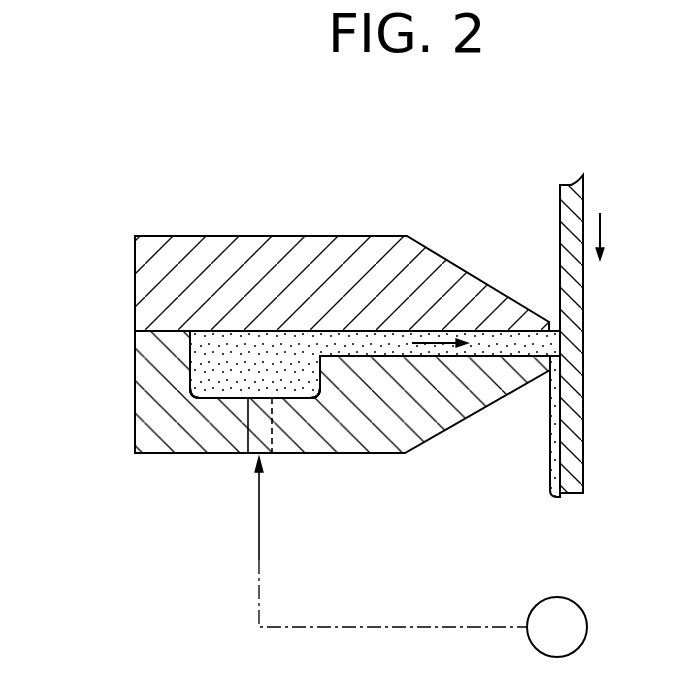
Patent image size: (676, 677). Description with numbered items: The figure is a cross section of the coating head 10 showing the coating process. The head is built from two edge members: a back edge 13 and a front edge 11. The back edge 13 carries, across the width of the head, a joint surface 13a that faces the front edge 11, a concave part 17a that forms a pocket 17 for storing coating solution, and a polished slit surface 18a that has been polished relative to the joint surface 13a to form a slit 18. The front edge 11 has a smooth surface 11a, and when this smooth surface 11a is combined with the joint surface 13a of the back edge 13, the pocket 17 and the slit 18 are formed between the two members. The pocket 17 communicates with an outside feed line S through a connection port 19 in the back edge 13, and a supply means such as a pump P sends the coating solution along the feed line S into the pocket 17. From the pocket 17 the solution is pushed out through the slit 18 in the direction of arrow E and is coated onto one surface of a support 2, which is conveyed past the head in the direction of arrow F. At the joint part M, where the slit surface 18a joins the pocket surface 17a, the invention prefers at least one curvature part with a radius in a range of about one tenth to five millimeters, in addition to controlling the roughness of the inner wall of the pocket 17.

The recording head assembly 10 is at (522, 132).
The front edge 11 is at (349, 245).
The smooth surface 11a is at (150, 333).
The back edge 13 is at (158, 430).
The joint surface 13a is at (137, 330).
The pocket 17 is at (202, 378).
The concave part 17a is at (310, 397).
The slit 18 is at (392, 345).
The slit surface 18a is at (490, 356).
The connection port 19 is at (248, 427).
The support 2 is at (571, 389).
The joint part M is at (313, 353).
The arrow indicating solution discharge direction E is at (437, 343).
The arrow indicating conveying direction F is at (603, 257).
The feed line S is at (372, 627).
The pump P is at (557, 627).